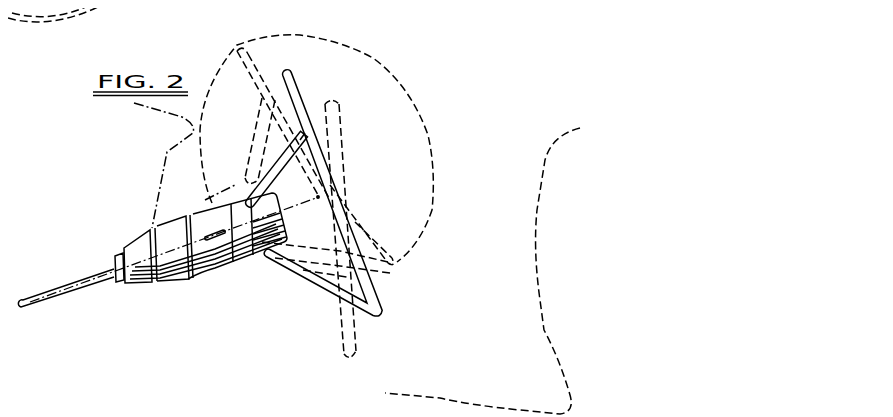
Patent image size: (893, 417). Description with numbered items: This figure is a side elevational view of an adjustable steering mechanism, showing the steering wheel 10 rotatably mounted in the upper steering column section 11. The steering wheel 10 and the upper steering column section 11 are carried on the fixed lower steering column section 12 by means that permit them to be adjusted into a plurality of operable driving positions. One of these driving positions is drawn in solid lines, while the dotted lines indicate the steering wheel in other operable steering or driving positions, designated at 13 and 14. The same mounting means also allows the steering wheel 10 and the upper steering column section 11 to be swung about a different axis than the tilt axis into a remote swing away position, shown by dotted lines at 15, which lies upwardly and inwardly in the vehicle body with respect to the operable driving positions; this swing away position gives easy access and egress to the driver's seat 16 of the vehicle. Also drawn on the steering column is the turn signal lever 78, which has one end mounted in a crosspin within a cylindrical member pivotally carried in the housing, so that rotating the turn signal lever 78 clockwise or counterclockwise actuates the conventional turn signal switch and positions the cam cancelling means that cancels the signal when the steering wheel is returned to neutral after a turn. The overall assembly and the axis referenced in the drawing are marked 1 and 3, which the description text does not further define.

The tool assembly 1 is at (406, 164).
The shaft / axis 3 is at (108, 282).
The steering wheel 10 is at (270, 258).
The upper steering column section 11 is at (193, 213).
The fixed lower steering column section 12 is at (149, 280).
The operable driving position 13 is at (249, 46).
The operable driving position 14 is at (348, 106).
The swing away position 15 is at (383, 62).
The driver's seat 16 is at (540, 326).
The turn signal lever 78 is at (222, 237).